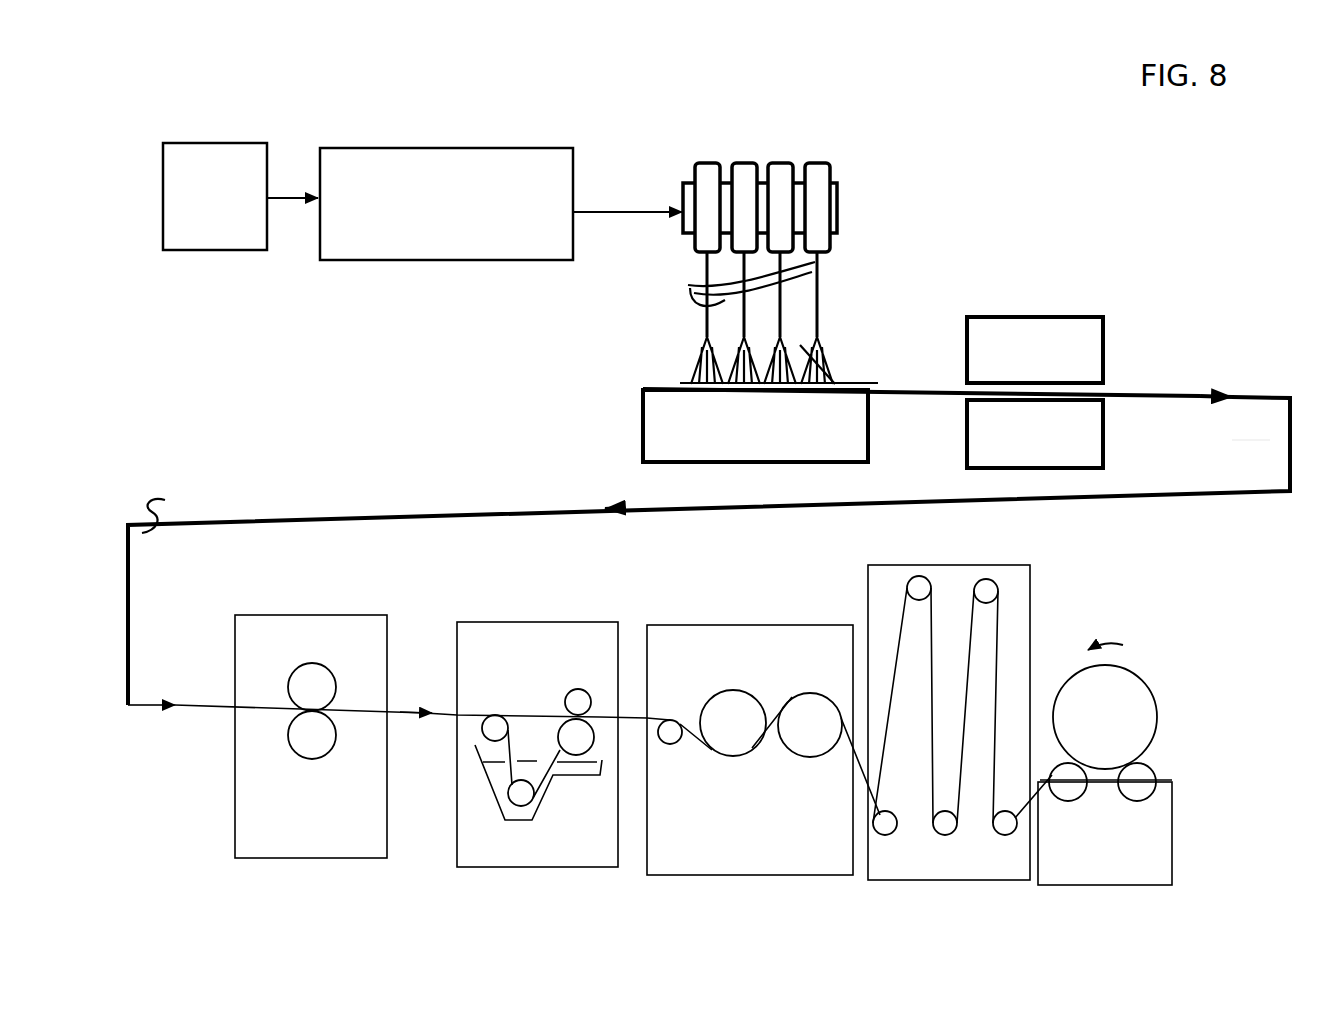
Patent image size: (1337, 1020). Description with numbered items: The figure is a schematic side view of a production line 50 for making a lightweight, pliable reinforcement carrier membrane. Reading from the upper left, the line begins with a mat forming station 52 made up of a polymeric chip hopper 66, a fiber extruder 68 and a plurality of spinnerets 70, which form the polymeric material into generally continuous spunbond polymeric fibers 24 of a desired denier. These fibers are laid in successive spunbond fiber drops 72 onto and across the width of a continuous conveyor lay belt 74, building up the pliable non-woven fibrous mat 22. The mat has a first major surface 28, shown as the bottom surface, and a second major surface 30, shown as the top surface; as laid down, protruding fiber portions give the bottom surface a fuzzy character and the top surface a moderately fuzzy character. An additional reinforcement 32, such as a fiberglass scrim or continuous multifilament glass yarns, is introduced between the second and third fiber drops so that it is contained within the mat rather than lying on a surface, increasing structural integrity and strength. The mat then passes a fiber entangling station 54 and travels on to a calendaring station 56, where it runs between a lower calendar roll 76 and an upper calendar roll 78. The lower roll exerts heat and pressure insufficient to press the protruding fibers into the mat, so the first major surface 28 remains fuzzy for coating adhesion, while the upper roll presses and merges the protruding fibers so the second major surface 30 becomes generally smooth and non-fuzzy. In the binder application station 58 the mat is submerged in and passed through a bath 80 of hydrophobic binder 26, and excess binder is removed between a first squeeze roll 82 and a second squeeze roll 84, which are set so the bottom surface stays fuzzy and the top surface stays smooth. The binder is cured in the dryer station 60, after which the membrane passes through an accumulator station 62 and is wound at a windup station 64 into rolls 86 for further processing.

The non-woven fibrous mat 22 is at (1168, 392).
The generally continuous spunbond polymeric fibers 24 is at (822, 358).
The hydrophobic binder 26 is at (550, 786).
The first major surface 28 is at (1265, 404).
The second major surface 30 is at (1252, 397).
The additional reinforcement 32 is at (768, 345).
The production line 50 is at (710, 470).
The mat forming station 52 is at (704, 207).
The fiber entangling station 54 is at (1114, 326).
The calendaring station 56 is at (256, 753).
The binder application station 58 is at (544, 735).
The dryer station 60 is at (754, 616).
The accumulator station 62 is at (1052, 599).
The windup station 64 is at (1141, 760).
The polymeric chip hopper 66 is at (218, 130).
The fiber extruder 68 is at (395, 130).
The spinnerets 70 is at (835, 126).
The spunbond fiber drops 72 is at (686, 284).
The continuous conveyor lay belt 74 is at (643, 412).
The lower calendar roll 76 is at (306, 760).
The upper calendar roll 78 is at (320, 663).
The bath of hydrophobic binder 80 is at (497, 790).
The first squeeze roll 82 is at (560, 723).
The second squeeze roll 84 is at (587, 660).
The rolls 86 is at (1157, 715).